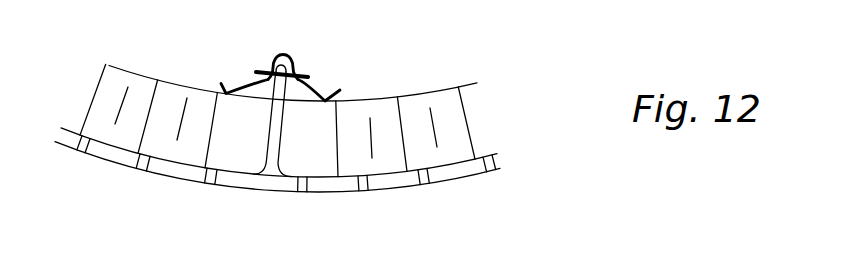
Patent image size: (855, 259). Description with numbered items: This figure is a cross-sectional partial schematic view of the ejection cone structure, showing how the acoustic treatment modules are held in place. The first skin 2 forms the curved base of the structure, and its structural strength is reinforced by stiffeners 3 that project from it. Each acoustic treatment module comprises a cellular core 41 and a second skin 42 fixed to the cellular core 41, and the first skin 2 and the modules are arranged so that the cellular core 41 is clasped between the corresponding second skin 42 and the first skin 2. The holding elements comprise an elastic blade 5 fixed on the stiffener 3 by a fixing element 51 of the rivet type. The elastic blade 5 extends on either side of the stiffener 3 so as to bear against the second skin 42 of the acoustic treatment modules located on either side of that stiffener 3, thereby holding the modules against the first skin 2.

The first skin 2 is at (393, 183).
The stiffener 3 is at (272, 163).
The elastic blade 5 is at (313, 92).
The fixing element 51 is at (258, 70).
The cellular core 41 is at (478, 120).
The second skin 42 is at (431, 88).